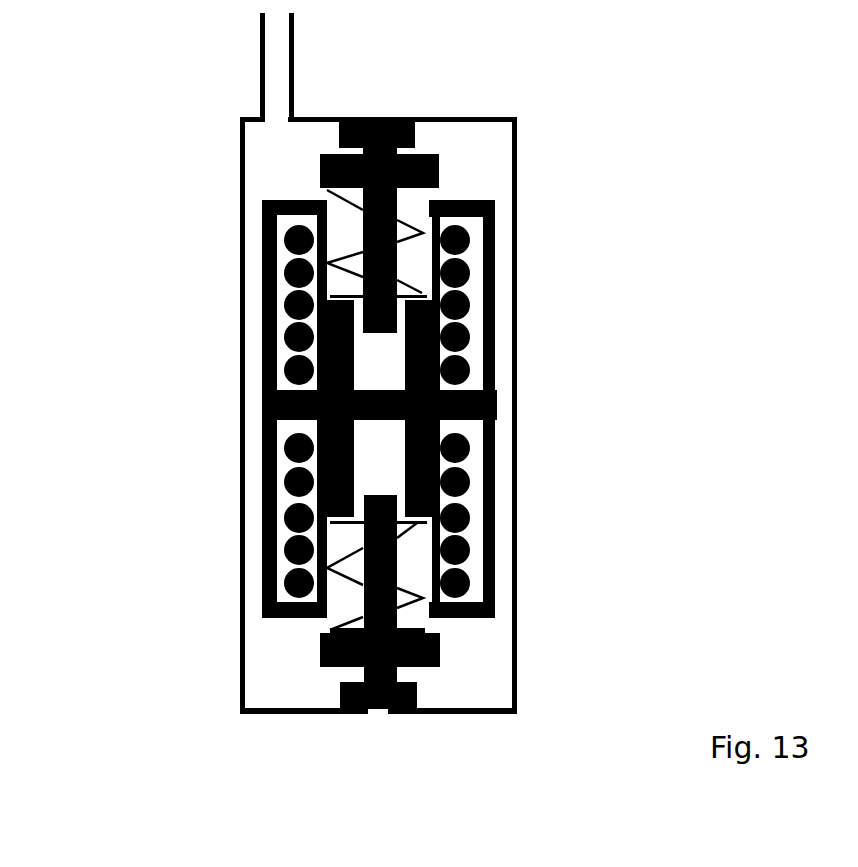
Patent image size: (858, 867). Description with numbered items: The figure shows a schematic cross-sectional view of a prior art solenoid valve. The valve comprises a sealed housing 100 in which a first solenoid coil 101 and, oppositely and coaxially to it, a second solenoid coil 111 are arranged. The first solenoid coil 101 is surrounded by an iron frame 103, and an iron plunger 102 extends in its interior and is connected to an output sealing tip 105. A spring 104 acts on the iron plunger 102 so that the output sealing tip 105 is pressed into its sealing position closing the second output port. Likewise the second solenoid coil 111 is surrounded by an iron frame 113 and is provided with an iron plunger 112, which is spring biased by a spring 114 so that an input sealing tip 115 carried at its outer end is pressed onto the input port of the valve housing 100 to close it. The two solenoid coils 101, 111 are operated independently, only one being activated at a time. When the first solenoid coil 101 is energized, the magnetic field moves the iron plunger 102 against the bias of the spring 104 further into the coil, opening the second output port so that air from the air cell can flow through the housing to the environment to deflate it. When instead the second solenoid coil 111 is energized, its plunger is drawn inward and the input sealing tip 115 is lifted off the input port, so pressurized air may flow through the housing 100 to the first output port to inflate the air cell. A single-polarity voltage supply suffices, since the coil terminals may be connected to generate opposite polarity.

The sealed housing 100 is at (518, 148).
The first solenoid coil 101 is at (467, 338).
The iron plunger 102 is at (320, 170).
The iron frame 103 is at (265, 258).
The spring 104 is at (410, 285).
The output sealing tip 105 is at (339, 132).
The second solenoid coil 111 is at (468, 523).
The iron plunger 112 is at (320, 648).
The iron frame 113 is at (262, 480).
The spring 114 is at (348, 621).
The input sealing tip 115 is at (417, 693).